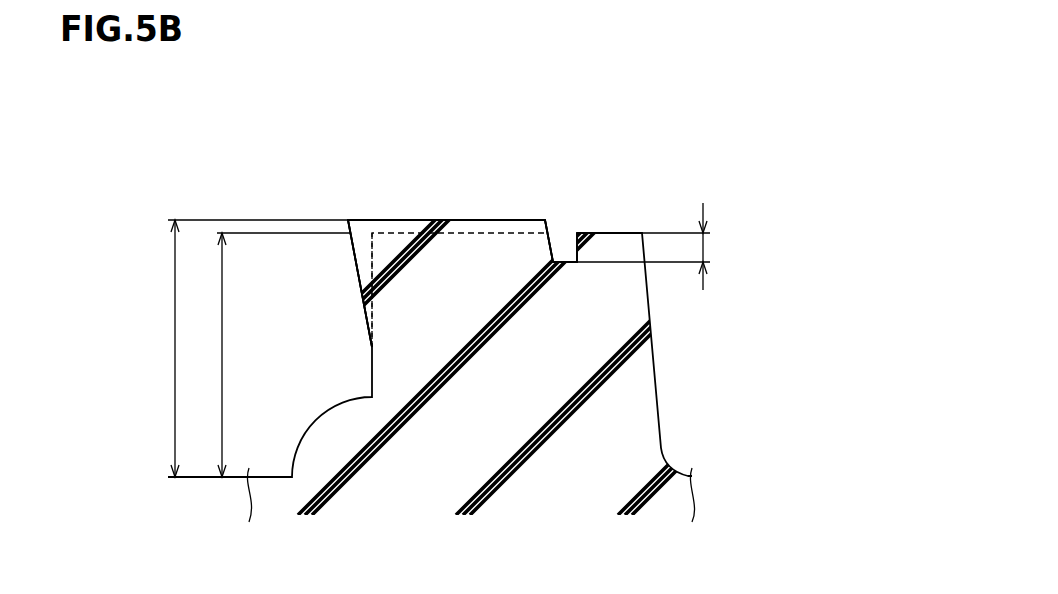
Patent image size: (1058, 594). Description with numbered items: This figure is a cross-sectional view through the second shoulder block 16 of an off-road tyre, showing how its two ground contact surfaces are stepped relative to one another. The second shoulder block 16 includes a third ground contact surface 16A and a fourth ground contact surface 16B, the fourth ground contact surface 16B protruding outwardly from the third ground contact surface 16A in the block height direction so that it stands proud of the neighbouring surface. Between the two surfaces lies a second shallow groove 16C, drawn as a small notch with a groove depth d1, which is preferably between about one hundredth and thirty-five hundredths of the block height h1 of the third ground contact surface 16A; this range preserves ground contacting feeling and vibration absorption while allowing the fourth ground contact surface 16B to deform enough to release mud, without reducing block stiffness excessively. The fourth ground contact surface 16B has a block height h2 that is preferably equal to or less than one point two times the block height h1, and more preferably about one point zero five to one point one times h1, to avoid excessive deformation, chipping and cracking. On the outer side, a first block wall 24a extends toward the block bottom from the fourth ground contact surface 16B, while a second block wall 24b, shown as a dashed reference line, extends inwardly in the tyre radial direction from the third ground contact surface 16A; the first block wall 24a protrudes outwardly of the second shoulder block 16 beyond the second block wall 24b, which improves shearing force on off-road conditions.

The second shoulder block 16 is at (658, 138).
The third ground contact surface 16A is at (482, 232).
The fourth ground contact surface 16B is at (395, 220).
The second shallow groove 16C is at (563, 228).
The first block wall 24a is at (354, 253).
The second block wall 24b is at (370, 272).
The block height of the third ground contact surface h1 is at (267, 355).
The block height of the fourth ground contact surface h2 is at (241, 348).
The groove depth of the second shallow groove d1 is at (659, 246).